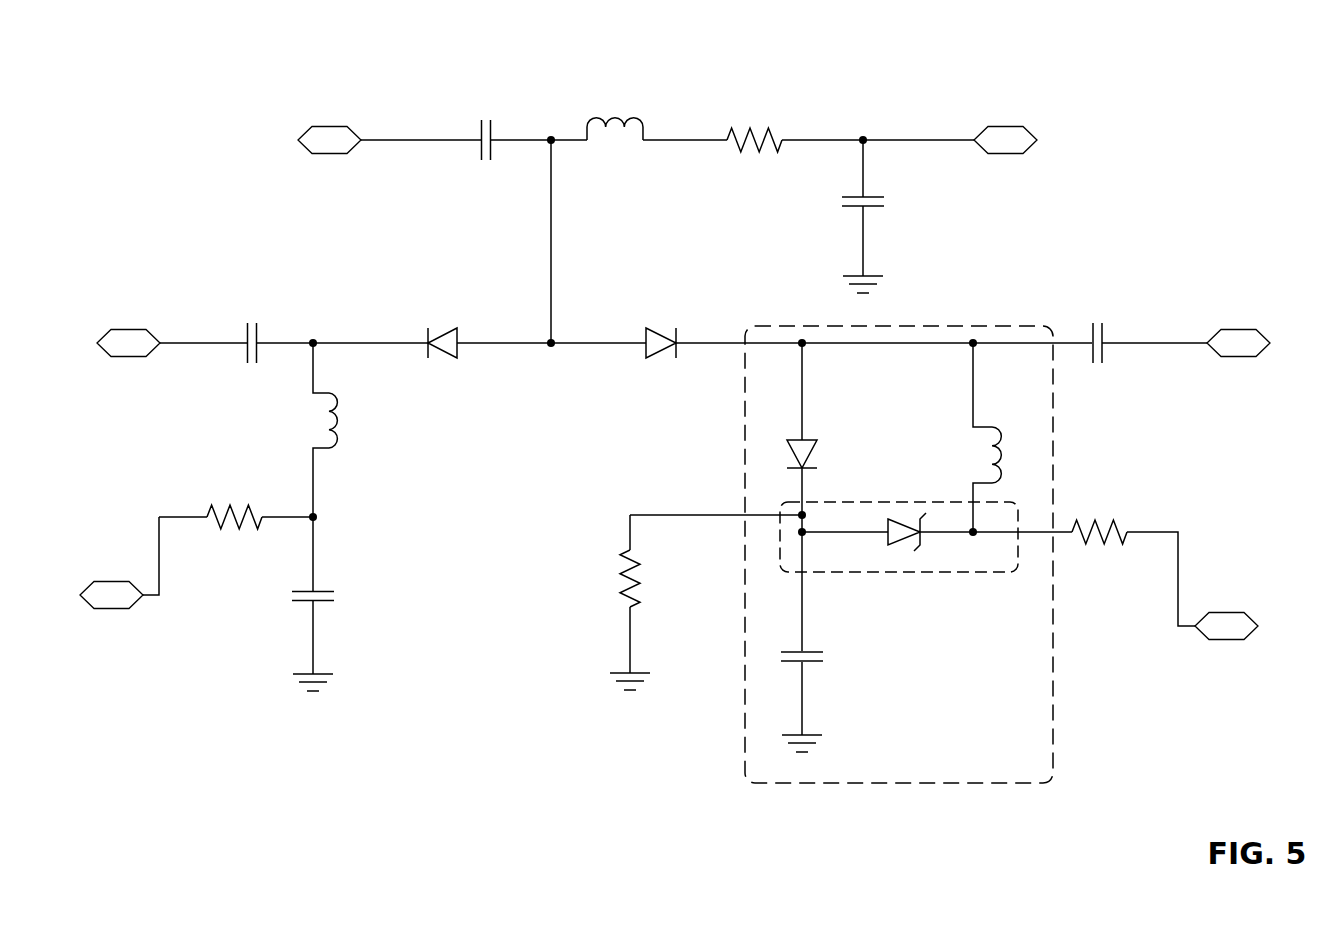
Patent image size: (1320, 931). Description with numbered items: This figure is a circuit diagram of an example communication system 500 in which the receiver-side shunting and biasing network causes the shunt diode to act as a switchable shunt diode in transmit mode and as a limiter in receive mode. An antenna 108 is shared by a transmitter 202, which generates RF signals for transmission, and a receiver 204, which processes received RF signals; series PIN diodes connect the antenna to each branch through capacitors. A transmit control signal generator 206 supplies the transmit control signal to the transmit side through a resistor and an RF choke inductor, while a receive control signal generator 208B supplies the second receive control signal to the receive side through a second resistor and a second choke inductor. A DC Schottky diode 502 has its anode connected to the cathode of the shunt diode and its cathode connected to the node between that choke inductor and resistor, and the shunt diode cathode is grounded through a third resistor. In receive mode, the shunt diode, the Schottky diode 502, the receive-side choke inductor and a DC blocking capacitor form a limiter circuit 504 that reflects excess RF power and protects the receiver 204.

The communication system 500 is at (145, 72).
The antenna 108 is at (313, 154).
The transmitter 202 is at (117, 358).
The receiver 204 is at (1237, 358).
The transmit control signal generator 206 is at (102, 610).
The receive control signal generator 208B is at (1218, 640).
The Schottky diode 502 is at (937, 572).
The limiter circuit 504 is at (822, 325).